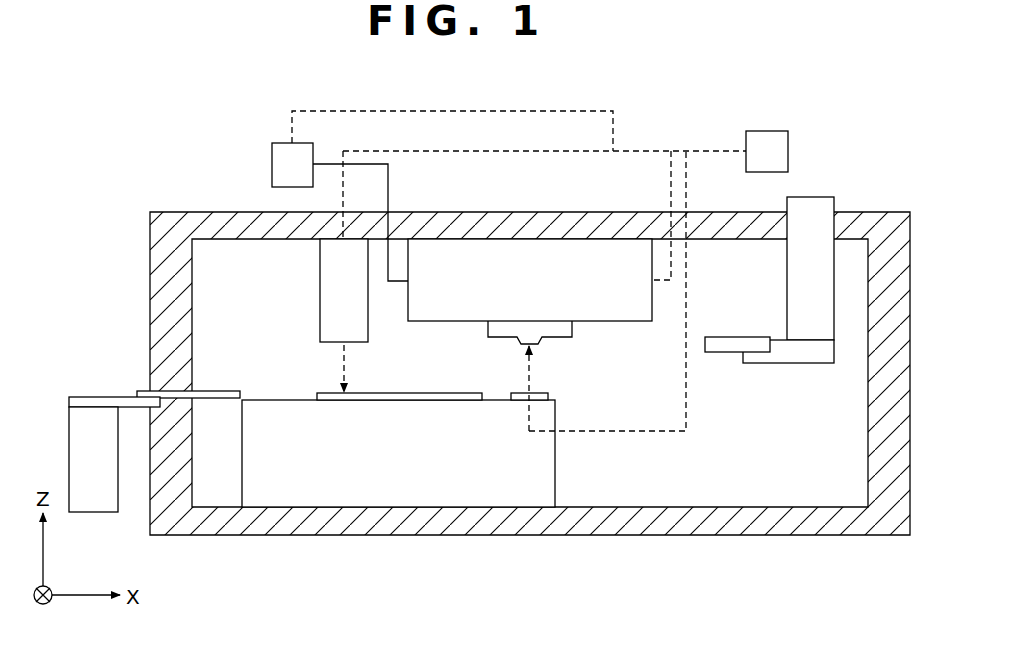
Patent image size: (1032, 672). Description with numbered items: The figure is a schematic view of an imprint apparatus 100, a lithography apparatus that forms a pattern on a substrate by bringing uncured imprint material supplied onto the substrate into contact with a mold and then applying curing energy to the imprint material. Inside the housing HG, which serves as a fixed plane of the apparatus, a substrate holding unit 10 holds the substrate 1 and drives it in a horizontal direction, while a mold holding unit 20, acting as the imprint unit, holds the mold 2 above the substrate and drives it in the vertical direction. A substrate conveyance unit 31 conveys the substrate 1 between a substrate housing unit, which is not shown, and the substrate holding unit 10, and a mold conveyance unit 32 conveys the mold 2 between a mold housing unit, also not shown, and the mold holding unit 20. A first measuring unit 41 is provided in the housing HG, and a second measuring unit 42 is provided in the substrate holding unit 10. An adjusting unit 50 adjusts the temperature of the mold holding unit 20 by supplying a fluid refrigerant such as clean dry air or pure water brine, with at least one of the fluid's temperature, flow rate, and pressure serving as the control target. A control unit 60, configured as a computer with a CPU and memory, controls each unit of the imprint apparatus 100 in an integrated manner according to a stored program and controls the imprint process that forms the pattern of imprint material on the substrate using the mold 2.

The imprint apparatus 100 is at (632, 74).
The housing HG is at (888, 218).
The substrate holding unit 10 is at (546, 477).
The substrate 1 is at (398, 393).
The mold 2 is at (493, 330).
The mold holding unit 20 is at (629, 322).
The first measuring unit 41 is at (320, 262).
The second measuring unit 42 is at (549, 398).
The adjusting unit 50 is at (273, 160).
The control unit 60 is at (770, 140).
The substrate conveyance unit 31 is at (100, 400).
The mold conveyance unit 32 is at (791, 358).